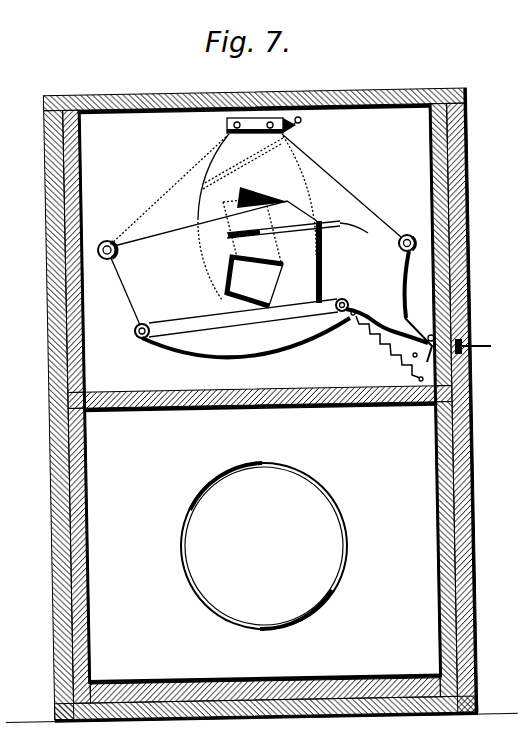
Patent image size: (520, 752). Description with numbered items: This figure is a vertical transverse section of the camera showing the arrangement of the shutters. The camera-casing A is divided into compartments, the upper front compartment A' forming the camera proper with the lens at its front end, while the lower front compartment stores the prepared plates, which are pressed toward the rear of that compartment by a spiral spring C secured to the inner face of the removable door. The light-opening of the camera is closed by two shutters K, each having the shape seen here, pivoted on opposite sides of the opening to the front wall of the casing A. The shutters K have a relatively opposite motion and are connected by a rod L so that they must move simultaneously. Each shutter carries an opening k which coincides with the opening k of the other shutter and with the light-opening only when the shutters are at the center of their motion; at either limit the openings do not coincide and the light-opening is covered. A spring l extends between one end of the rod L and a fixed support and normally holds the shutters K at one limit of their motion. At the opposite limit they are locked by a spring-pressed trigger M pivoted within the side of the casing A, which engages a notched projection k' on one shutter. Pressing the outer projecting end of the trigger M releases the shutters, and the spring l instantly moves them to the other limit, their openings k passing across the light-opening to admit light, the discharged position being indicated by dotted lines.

The camera-casing A is at (259, 405).
The upper front compartment A' is at (379, 89).
The spiral spring C is at (228, 624).
The shutter K is at (256, 221).
The opening k is at (260, 238).
The notched projection k' is at (387, 297).
The rod L is at (196, 318).
The spring l is at (375, 337).
The spring-pressed trigger M is at (431, 334).